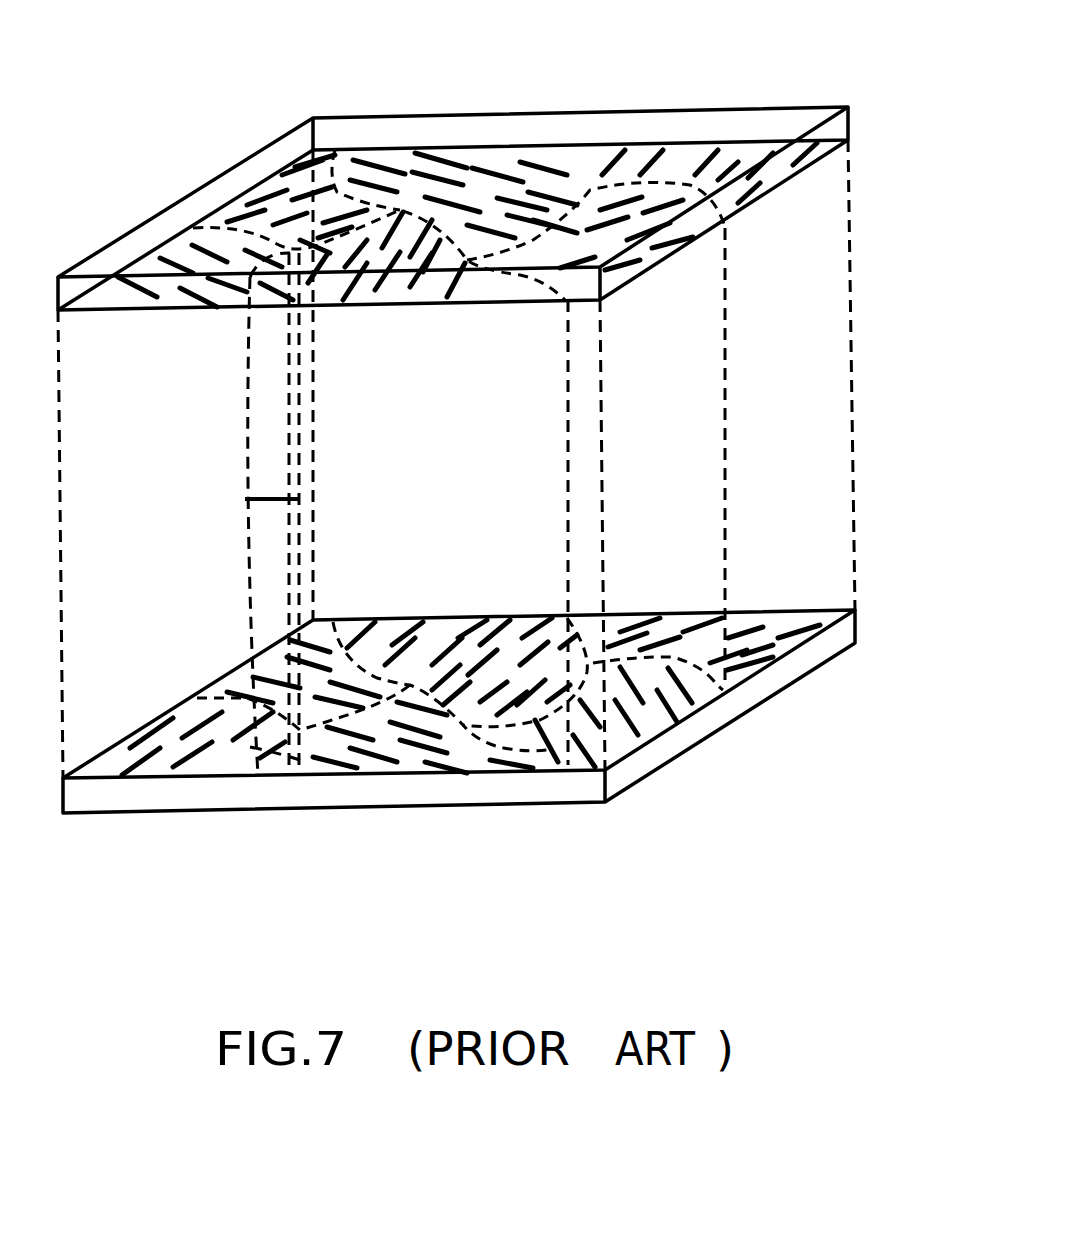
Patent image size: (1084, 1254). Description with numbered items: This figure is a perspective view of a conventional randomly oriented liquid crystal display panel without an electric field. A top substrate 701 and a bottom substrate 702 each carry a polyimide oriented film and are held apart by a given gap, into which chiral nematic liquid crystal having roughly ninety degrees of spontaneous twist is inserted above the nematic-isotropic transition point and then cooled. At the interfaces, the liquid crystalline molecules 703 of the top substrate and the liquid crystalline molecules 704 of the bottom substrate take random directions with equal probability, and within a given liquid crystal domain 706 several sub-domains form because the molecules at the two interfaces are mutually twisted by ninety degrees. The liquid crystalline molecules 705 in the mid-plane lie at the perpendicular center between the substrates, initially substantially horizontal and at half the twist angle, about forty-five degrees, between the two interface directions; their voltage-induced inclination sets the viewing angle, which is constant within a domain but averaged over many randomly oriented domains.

The top substrate 701 is at (727, 230).
The bottom substrate 702 is at (660, 752).
The liquid crystalline molecules of the top substrate 703 is at (268, 270).
The liquid crystalline molecules of the bottom substrate 704 is at (272, 757).
The liquid crystalline molecules in the mid-plane 705 is at (278, 500).
The liquid crystal domain 706 is at (333, 203).